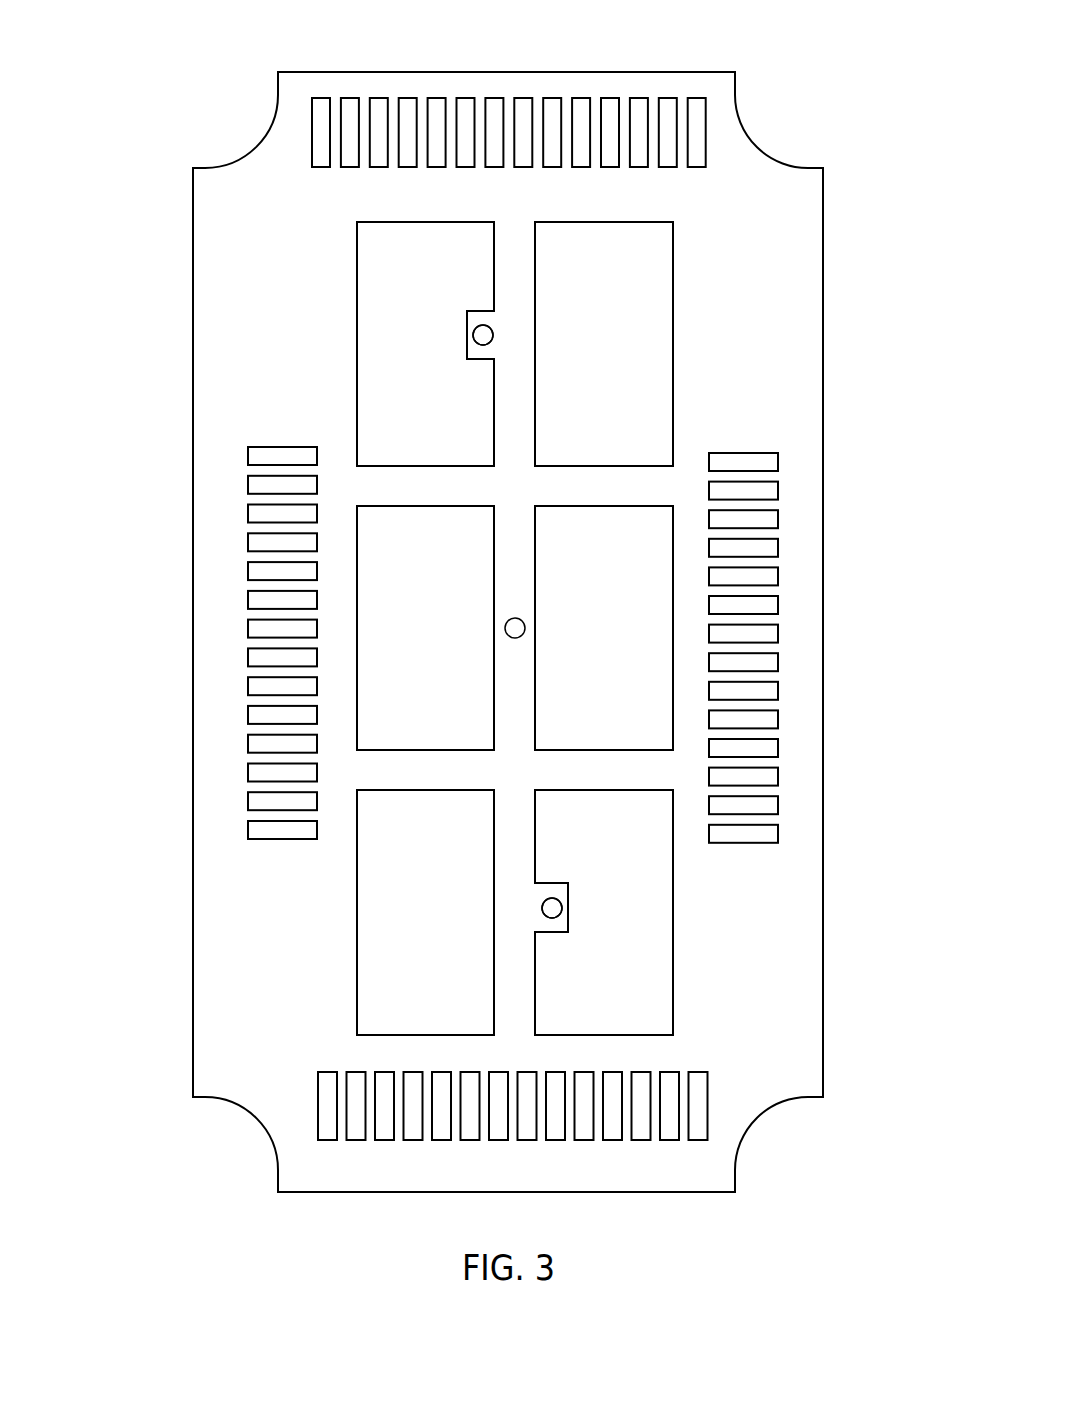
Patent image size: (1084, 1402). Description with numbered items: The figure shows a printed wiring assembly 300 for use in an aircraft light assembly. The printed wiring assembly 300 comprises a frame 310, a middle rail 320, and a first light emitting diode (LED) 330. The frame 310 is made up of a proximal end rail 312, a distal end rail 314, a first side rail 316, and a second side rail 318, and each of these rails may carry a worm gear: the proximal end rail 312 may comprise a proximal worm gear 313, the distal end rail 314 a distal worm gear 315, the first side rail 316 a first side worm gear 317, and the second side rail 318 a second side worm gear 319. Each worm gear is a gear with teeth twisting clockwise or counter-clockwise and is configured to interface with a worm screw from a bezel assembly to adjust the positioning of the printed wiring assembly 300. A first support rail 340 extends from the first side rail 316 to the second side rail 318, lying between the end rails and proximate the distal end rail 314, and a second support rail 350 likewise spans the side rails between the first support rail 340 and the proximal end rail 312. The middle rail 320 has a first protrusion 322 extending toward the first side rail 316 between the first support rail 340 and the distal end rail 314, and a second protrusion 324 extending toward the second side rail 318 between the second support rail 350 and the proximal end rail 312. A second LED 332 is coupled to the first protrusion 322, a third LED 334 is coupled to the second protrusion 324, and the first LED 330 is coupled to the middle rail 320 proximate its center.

The printed wiring assembly 300 is at (100, 106).
The frame 310 is at (221, 294).
The proximal end rail 312 is at (382, 1155).
The proximal worm gear 313 is at (564, 1127).
The distal end rail 314 is at (657, 82).
The distal worm gear 315 is at (407, 137).
The first side rail 316 is at (257, 935).
The first side worm gear 317 is at (263, 675).
The second side rail 318 is at (707, 302).
The second side worm gear 319 is at (755, 600).
The middle rail 320 is at (514, 433).
The first protrusion 322 is at (467, 336).
The second protrusion 324 is at (568, 913).
The first light emitting diode (LED) 330 is at (506, 623).
The second LED 332 is at (486, 328).
The third LED 334 is at (558, 914).
The first support rail 340 is at (415, 483).
The second support rail 350 is at (417, 772).